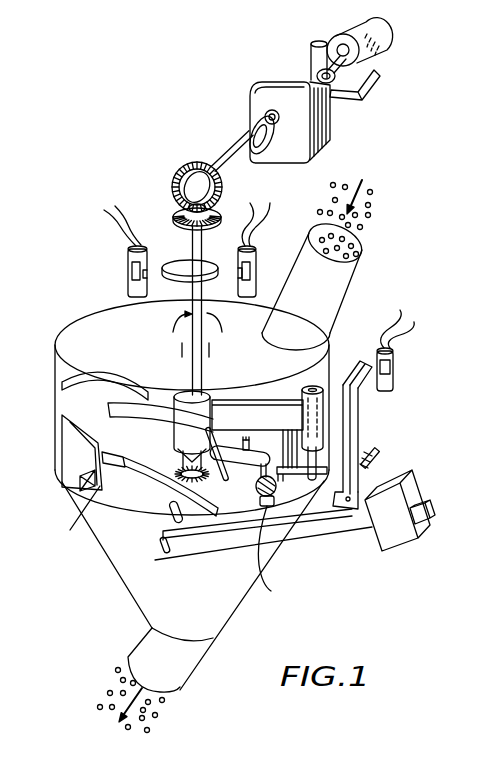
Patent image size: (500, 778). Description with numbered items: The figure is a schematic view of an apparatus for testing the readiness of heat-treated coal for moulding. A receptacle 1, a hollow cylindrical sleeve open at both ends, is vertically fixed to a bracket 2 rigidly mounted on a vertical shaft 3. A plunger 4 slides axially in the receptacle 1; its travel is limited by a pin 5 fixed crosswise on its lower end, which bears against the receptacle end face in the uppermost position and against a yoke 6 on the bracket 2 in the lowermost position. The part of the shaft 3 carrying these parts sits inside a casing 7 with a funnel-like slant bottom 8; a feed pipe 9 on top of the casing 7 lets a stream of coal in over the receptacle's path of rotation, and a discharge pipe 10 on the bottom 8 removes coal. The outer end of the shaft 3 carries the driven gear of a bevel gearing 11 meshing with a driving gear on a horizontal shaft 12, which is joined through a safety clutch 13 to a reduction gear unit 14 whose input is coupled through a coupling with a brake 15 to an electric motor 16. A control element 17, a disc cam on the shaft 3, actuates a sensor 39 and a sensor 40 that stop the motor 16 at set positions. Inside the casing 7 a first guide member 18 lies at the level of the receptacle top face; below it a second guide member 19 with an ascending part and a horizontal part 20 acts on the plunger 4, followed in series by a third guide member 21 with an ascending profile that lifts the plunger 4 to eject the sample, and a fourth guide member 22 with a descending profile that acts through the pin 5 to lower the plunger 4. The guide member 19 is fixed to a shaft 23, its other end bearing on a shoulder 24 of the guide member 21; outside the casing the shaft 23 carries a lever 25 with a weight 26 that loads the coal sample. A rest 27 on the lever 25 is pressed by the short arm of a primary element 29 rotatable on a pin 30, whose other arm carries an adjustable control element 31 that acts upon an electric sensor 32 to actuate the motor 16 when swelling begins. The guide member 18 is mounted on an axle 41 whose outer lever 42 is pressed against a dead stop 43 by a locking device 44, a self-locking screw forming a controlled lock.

The receptacle 1 is at (314, 389).
The bracket 2 is at (247, 400).
The vertical shaft 3 is at (212, 238).
The plunger 4 is at (314, 478).
The pin 5 is at (291, 478).
The yoke 6 is at (286, 456).
The casing 7 is at (88, 332).
The slant bottom 8 is at (115, 568).
The feed pipe 9 is at (306, 241).
The discharge pipe 10 is at (145, 643).
The bevel gearing 11 is at (168, 189).
The horizontal shaft 12 is at (223, 153).
The safety clutch 13 is at (243, 122).
The reduction gear unit 14 is at (265, 83).
The coupling with a brake 15 is at (310, 55).
The electric motor 16 is at (373, 33).
The control element 17 is at (181, 262).
The first guide member 18 is at (157, 411).
The second guide member 19 is at (125, 470).
The horizontal part 20 is at (84, 524).
The third guide member 21 is at (67, 450).
The fourth guide member 22 is at (62, 378).
The shaft 23 is at (163, 553).
The shoulder 24 is at (79, 486).
The lever 25 is at (366, 527).
The weight 26 is at (405, 541).
The rest 27 is at (333, 525).
The primary element 29 is at (352, 434).
The pin 30 is at (375, 463).
The control element 31 is at (363, 380).
The electric sensor 32 is at (394, 366).
The sensor 39 is at (128, 267).
The sensor 40 is at (257, 262).
The axle 41 is at (173, 453).
The lever 42 is at (251, 488).
The dead stop 43 is at (232, 450).
The locking device 44 is at (273, 563).